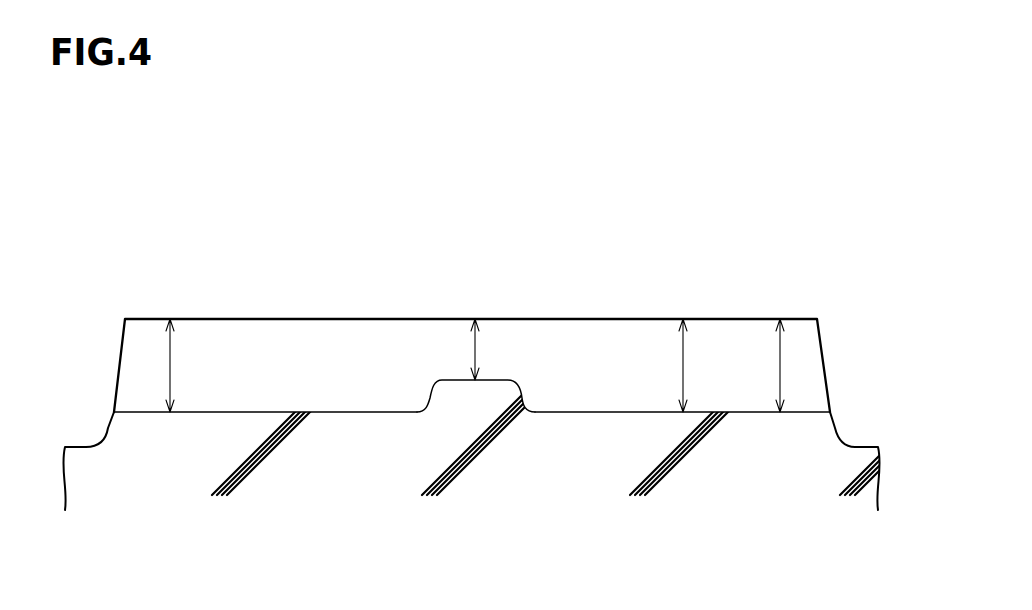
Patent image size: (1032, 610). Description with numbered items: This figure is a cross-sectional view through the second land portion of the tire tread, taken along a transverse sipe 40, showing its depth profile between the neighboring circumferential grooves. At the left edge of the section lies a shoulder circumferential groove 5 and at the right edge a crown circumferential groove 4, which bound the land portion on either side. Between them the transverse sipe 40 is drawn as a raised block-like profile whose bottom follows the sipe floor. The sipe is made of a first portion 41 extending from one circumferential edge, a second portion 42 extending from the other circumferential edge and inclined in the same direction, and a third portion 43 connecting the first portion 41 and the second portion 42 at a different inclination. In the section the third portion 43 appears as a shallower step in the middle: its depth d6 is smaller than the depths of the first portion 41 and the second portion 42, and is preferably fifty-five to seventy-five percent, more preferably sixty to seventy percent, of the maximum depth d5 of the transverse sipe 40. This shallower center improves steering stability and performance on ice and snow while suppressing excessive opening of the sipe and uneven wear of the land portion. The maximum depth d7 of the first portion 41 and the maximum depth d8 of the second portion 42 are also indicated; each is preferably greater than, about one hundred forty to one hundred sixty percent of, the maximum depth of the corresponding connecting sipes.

The crown circumferential groove 4 is at (857, 432).
The shoulder circumferential groove 5 is at (87, 433).
The transverse sipe 40 is at (215, 315).
The first portion 41 is at (610, 395).
The second portion 42 is at (278, 395).
The third portion 43 is at (453, 363).
The maximum depth of transverse sipe d5 is at (683, 365).
The depth of third portion d6 is at (475, 348).
The maximum depth of first portion d7 is at (780, 365).
The maximum depth of second portion d8 is at (170, 365).